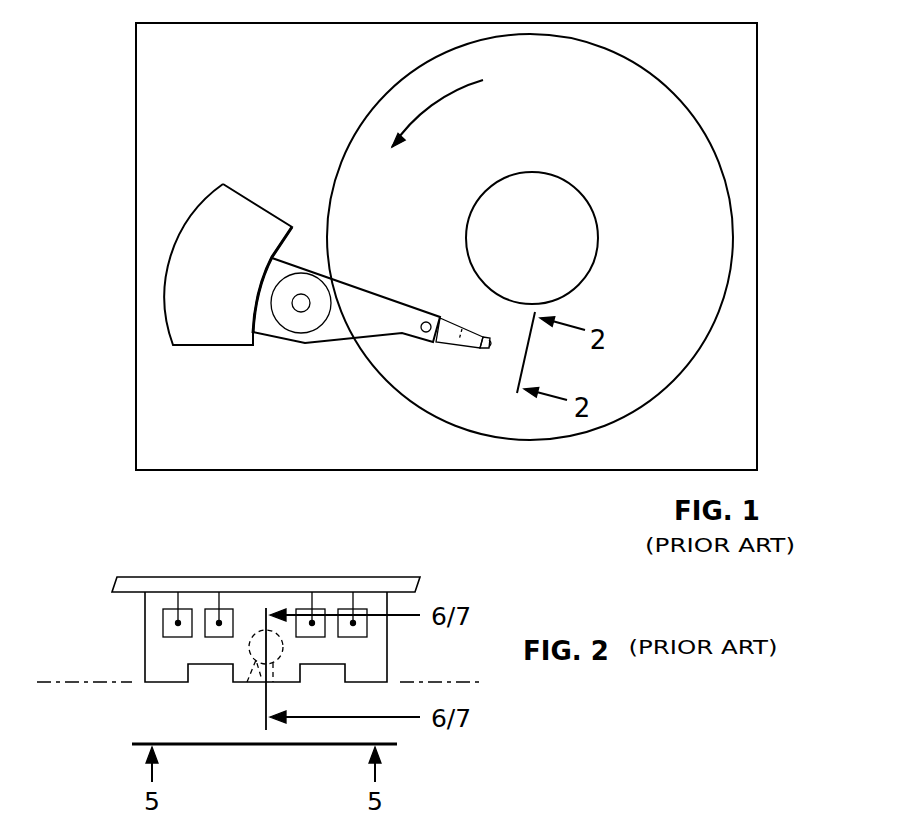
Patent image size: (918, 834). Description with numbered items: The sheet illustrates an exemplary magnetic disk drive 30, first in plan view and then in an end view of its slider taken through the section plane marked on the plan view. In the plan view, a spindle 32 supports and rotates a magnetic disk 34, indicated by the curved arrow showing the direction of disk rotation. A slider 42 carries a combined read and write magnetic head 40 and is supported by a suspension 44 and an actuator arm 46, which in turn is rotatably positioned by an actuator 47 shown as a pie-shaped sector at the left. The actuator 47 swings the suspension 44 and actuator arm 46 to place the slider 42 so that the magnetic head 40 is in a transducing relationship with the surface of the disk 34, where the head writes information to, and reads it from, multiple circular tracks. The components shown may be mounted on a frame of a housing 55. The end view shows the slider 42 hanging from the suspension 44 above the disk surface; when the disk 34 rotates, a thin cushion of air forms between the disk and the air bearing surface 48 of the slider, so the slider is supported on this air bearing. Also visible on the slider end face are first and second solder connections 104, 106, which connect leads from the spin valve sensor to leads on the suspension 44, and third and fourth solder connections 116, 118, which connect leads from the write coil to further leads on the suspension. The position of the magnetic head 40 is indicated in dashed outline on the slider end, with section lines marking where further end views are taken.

In FIG. 1, the magnetic disk drive 30 is at (777, 55).
In FIG. 1, the spindle 32 is at (568, 184).
In FIG. 1, the magnetic disk 34 is at (655, 258).
In FIG. 1, the magnetic head 40 is at (490, 348).
In FIG. 2, the magnetic head 40 is at (251, 688).
In FIG. 1, the slider 42 is at (488, 338).
In FIG. 2, the slider 42 is at (143, 623).
In FIG. 1, the suspension 44 is at (450, 345).
In FIG. 1, the actuator arm 46 is at (389, 302).
In FIG. 1, the actuator 47 is at (263, 213).
In FIG. 2, the air bearing surface 48 is at (63, 686).
In FIG. 2, the first solder connection 104 is at (163, 613).
In FIG. 2, the second solder connection 106 is at (337, 612).
In FIG. 2, the third solder connection 116 is at (203, 613).
In FIG. 2, the fourth solder connection 118 is at (295, 612).
In FIG. 2, the housing 55 is at (713, 833).